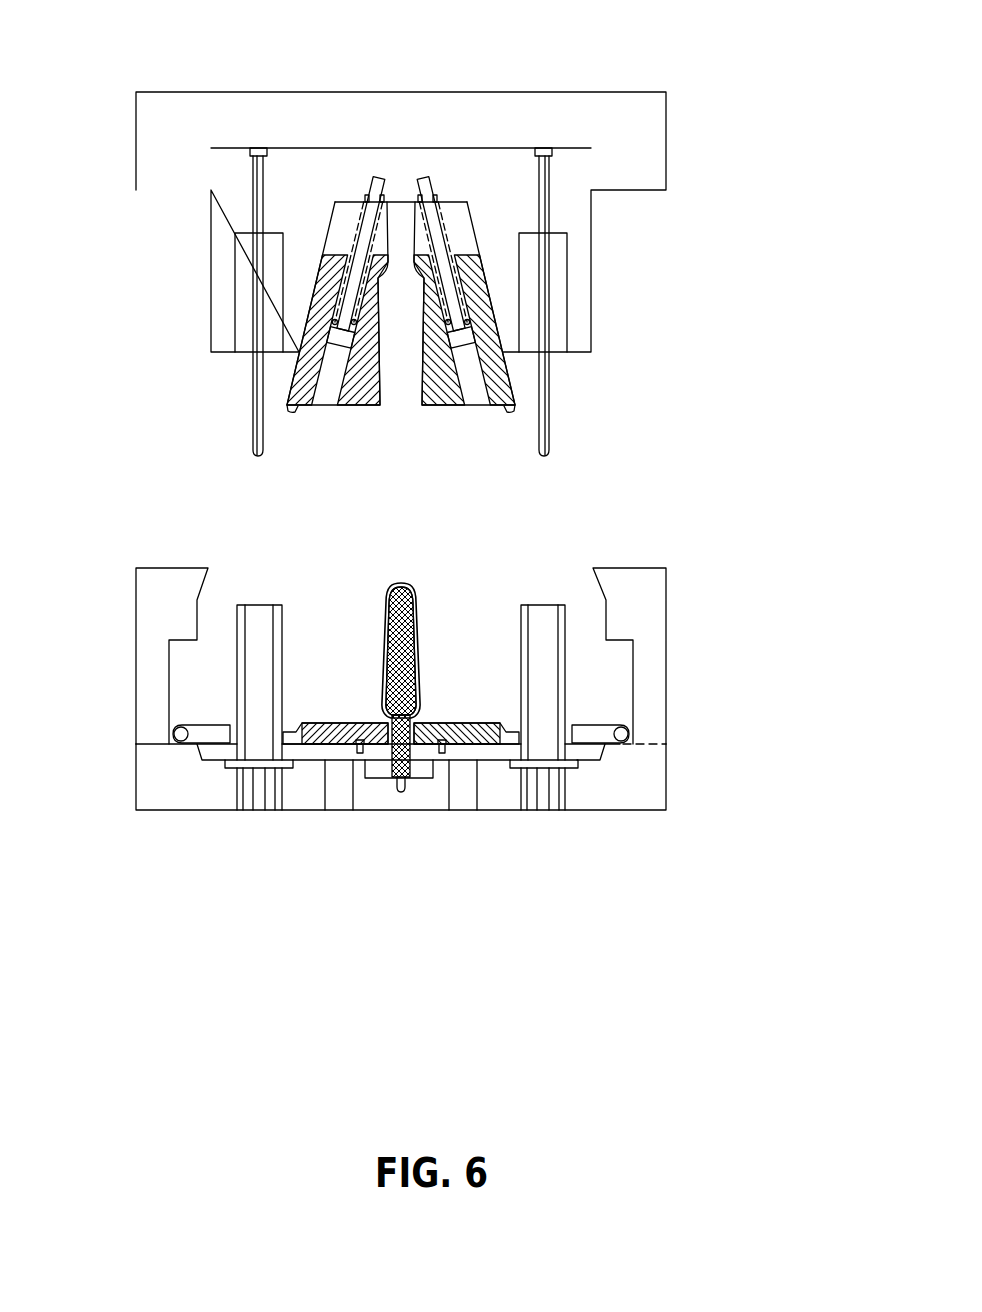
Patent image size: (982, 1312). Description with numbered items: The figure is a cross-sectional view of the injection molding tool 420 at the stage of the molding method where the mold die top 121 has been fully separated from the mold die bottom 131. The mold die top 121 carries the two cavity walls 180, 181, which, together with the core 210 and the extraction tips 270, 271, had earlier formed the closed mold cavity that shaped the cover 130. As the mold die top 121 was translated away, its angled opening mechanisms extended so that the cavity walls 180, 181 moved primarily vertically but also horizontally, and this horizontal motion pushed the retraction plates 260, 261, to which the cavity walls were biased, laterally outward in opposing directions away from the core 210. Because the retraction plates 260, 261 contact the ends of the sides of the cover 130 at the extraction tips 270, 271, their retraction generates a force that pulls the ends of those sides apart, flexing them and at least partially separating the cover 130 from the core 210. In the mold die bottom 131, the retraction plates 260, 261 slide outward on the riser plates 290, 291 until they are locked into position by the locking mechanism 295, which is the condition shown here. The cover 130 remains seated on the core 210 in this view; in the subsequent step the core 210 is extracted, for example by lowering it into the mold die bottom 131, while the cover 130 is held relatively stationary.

The injection molding tool 420 is at (142, 50).
The mold die top 121 is at (606, 245).
The mold die bottom 131 is at (639, 903).
The cavity wall 180 is at (353, 400).
The cavity wall 181 is at (445, 400).
The extraction tip 270 is at (353, 720).
The extraction tip 271 is at (472, 723).
The retraction plate 260 is at (317, 723).
The retraction plate 261 is at (504, 723).
The core 210 is at (388, 597).
The cover 130 is at (403, 583).
The riser plate 290 is at (310, 750).
The riser plate 291 is at (487, 753).
The locking mechanism 295 is at (442, 760).